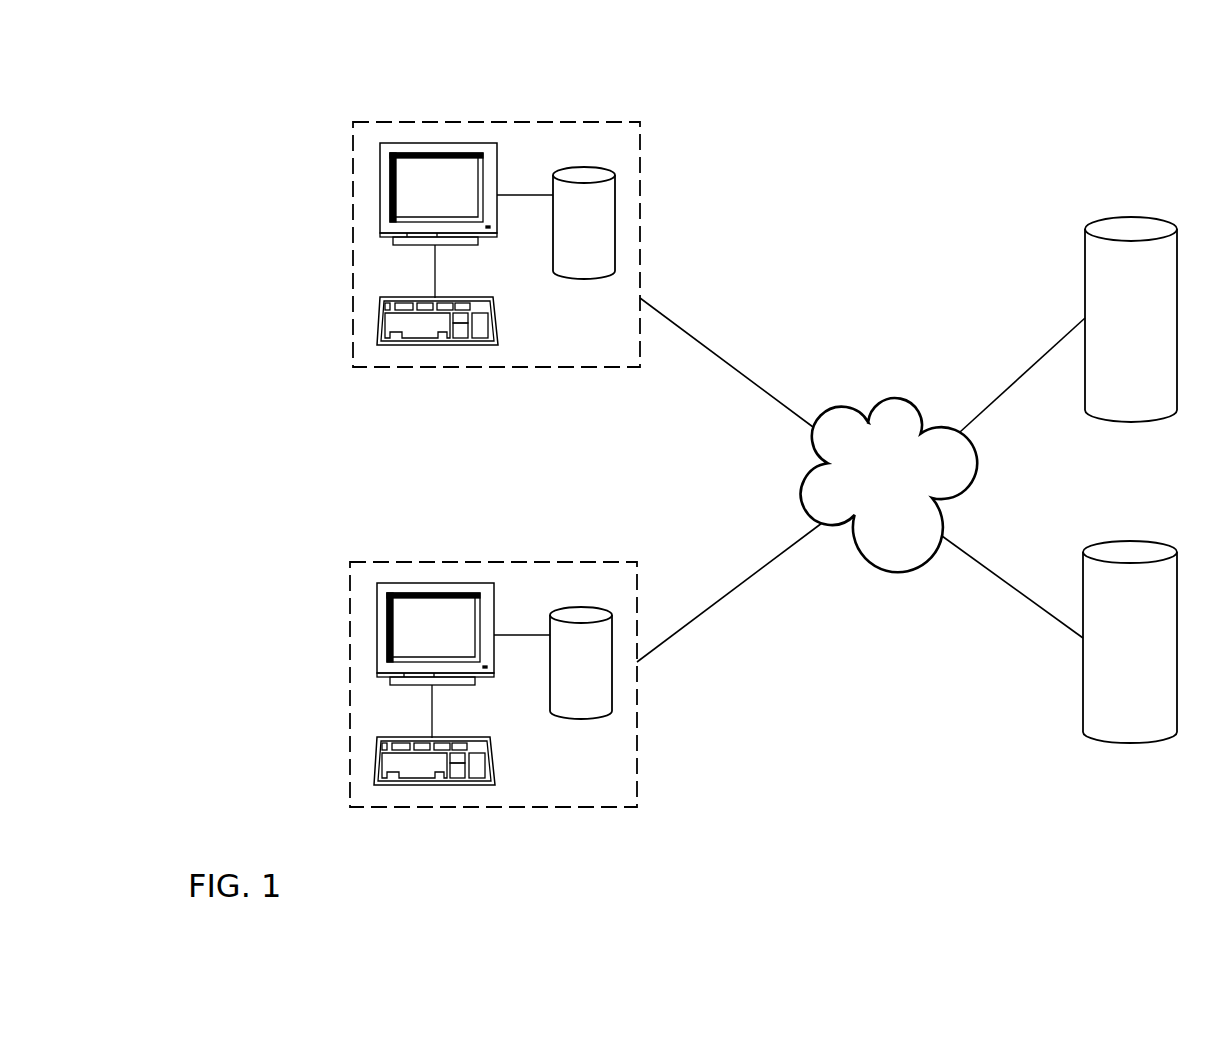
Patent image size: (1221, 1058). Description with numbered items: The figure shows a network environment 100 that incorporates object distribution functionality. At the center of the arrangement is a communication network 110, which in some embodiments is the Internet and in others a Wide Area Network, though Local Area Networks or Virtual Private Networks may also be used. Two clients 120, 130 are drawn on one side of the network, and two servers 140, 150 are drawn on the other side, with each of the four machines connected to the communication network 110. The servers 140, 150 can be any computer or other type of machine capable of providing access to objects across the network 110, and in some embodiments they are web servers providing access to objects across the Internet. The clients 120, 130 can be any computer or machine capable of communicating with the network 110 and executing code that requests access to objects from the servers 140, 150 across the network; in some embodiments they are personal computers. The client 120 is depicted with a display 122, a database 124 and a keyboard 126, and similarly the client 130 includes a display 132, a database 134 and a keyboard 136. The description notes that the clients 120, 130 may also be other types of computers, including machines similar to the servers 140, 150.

The network environment 100 is at (946, 148).
The communication network 110 is at (867, 496).
The client 120 is at (524, 662).
The display 122 is at (435, 634).
The database 124 is at (581, 663).
The keyboard 126 is at (471, 761).
The client 130 is at (648, 155).
The display 132 is at (417, 206).
The database 134 is at (563, 241).
The keyboard 136 is at (482, 330).
The server 140 is at (1113, 341).
The server 150 is at (1112, 662).